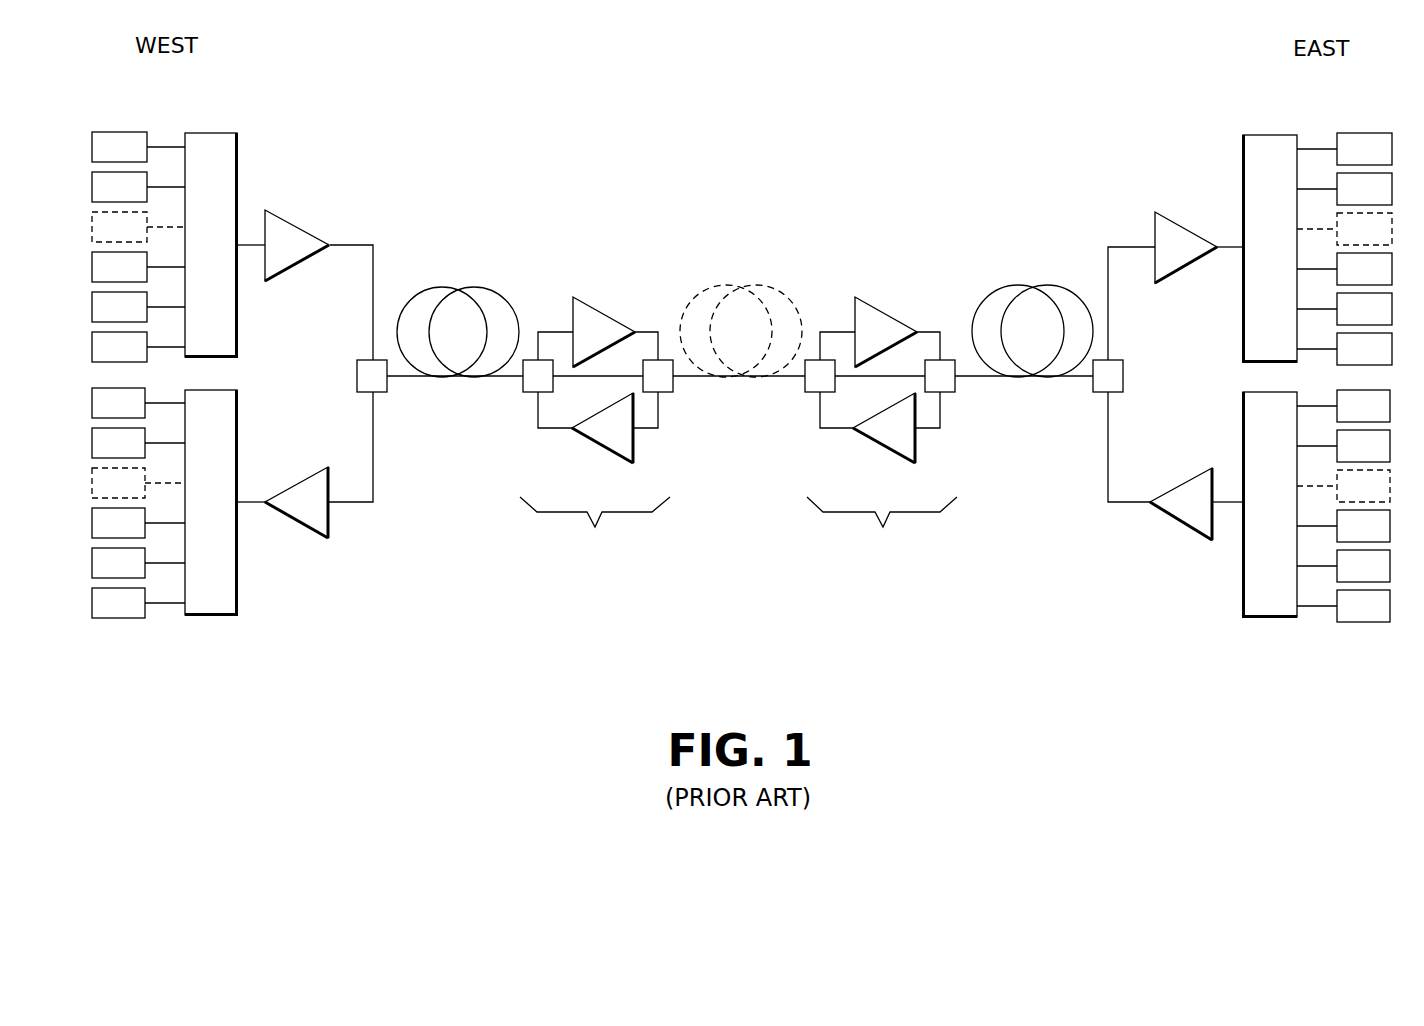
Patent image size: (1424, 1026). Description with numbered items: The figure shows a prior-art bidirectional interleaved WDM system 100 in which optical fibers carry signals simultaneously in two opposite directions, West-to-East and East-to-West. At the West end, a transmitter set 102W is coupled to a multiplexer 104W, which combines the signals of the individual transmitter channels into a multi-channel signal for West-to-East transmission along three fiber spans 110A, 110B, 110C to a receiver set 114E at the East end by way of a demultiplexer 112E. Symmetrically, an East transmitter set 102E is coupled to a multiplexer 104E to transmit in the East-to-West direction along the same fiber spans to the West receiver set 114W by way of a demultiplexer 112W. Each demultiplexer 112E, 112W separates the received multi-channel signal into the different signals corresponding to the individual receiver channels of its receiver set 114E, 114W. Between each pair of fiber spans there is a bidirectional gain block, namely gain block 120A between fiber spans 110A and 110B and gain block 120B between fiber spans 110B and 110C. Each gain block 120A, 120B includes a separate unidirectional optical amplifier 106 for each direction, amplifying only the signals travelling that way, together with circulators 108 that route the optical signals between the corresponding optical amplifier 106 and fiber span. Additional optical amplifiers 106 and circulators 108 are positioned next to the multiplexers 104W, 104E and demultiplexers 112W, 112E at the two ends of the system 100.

The bidirectional interleaved WDM system 100 is at (461, 652).
The transmitter set 102W is at (108, 131).
The multiplexer 104W is at (215, 133).
The unidirectional optical amplifier 106 is at (286, 228).
The circulator 108 is at (378, 392).
The fiber span 110A is at (458, 288).
The fiber span 110B is at (740, 287).
The fiber span 110C is at (1030, 286).
The demultiplexer 112W is at (217, 615).
The receiver set 114W is at (115, 618).
The demultiplexer 112E is at (1270, 135).
The receiver set 114E is at (1360, 133).
The multiplexer 104E is at (1265, 617).
The transmitter set 102E is at (1352, 622).
The bidirectional gain block 120A is at (595, 448).
The bidirectional gain block 120B is at (882, 448).